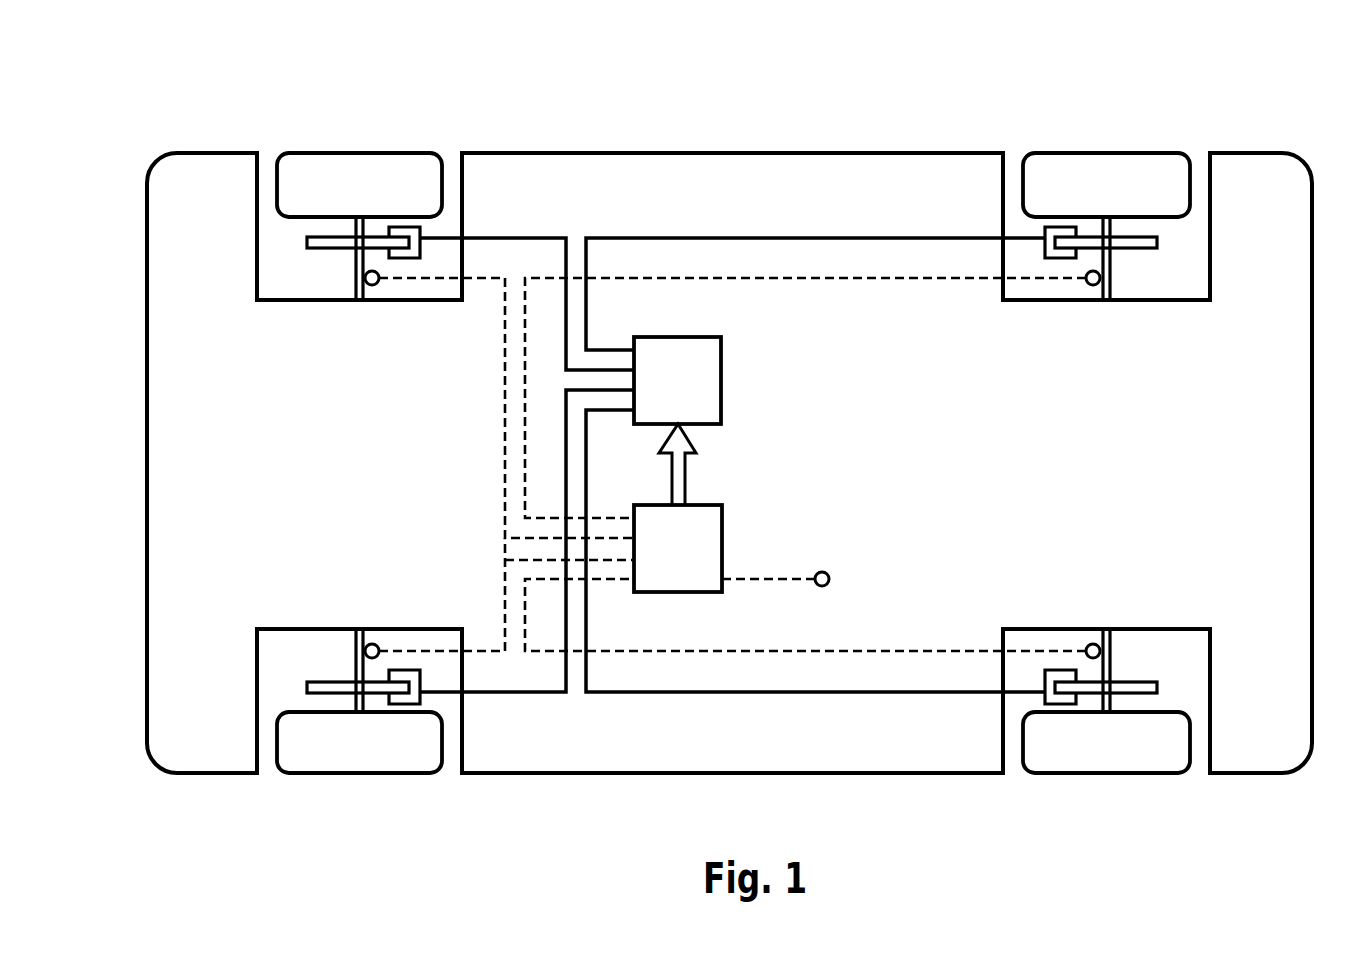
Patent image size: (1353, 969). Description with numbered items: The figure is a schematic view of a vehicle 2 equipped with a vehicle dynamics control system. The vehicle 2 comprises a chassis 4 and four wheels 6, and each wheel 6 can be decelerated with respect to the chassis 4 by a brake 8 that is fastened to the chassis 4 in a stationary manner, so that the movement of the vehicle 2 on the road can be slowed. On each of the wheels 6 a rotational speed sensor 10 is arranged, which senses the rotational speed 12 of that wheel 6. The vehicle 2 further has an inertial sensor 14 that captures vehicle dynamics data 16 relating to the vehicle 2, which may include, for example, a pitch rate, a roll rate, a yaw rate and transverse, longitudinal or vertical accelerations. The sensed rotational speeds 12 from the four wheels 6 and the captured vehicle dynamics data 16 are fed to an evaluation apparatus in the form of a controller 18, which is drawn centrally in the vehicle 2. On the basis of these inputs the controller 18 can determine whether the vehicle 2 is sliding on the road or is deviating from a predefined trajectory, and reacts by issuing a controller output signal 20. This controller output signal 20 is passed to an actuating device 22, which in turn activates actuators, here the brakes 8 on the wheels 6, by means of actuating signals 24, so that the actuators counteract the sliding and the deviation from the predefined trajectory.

The vehicle 2 is at (152, 115).
The chassis 4 is at (721, 153).
The wheel 6 is at (368, 153).
The brake 8 is at (330, 250).
The rotational speed sensor 10 is at (372, 286).
The rotational speed 12 is at (485, 282).
The inertial sensor 14 is at (827, 574).
The vehicle dynamics data 16 is at (760, 583).
The controller 18 is at (722, 533).
The controller output signal 20 is at (685, 478).
The actuating device 22 is at (721, 357).
The actuating signal 24 is at (533, 237).